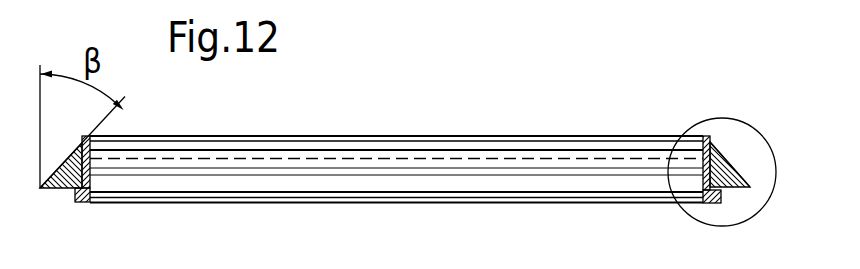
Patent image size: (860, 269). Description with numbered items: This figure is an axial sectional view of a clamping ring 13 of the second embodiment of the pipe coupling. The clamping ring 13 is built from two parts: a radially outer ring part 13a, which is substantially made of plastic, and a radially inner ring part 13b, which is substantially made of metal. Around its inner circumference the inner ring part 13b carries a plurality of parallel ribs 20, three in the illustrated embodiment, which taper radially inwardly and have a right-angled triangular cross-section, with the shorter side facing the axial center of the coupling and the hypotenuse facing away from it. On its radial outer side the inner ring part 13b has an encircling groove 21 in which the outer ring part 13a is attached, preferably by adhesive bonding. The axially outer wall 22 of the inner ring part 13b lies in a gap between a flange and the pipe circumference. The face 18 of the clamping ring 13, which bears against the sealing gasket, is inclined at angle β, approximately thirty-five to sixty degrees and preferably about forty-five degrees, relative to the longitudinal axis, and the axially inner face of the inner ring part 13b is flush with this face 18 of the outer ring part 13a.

The clamping ring 13 is at (396, 132).
The radially outer ring part 13a is at (748, 182).
The radially inner ring part 13b is at (708, 142).
The face 18 is at (63, 160).
The ribs 20 is at (422, 189).
The encircling groove 21 is at (733, 160).
The axially outer wall 22 is at (715, 203).